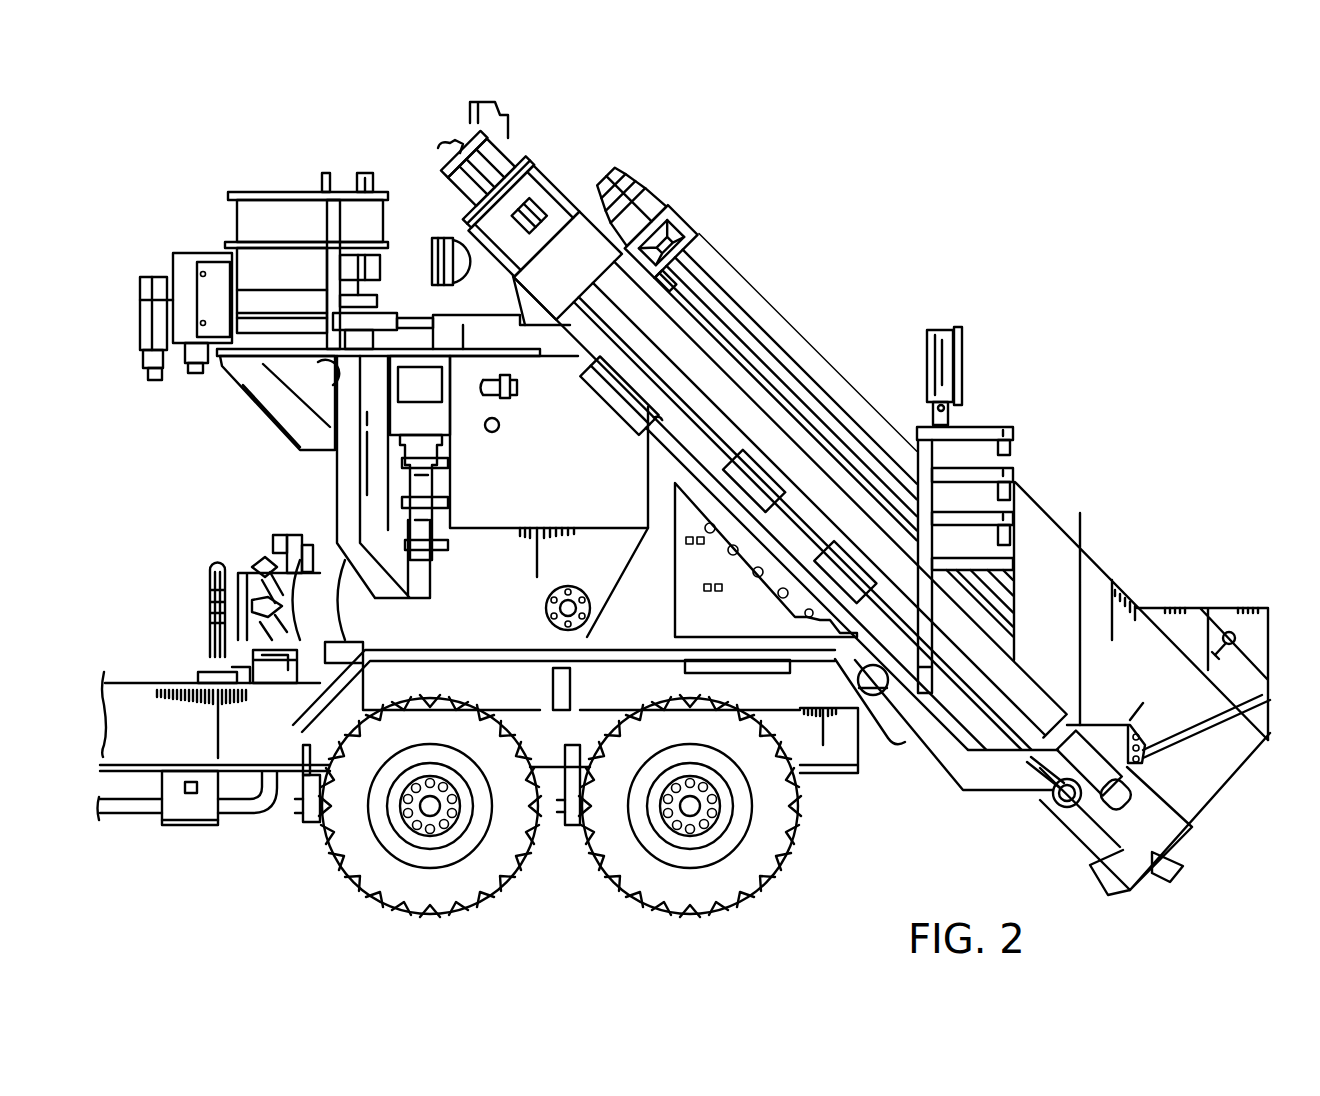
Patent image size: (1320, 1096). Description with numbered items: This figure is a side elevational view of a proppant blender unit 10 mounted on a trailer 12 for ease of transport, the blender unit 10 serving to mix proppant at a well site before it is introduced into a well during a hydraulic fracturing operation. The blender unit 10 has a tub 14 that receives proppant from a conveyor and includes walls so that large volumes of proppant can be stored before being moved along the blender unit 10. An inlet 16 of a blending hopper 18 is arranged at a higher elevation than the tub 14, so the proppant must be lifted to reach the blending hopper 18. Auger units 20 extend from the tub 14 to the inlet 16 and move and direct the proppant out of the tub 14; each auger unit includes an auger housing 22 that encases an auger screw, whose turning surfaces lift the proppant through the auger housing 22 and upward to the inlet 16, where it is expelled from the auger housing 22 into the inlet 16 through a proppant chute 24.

The proppant blender unit 10 is at (684, 516).
The trailer 12 is at (232, 860).
The tub 14 is at (1212, 588).
The inlet 16 is at (490, 352).
The blending hopper 18 is at (562, 474).
The auger units 20 is at (847, 466).
The auger housing 22 is at (778, 312).
The proppant chute 24 is at (523, 300).